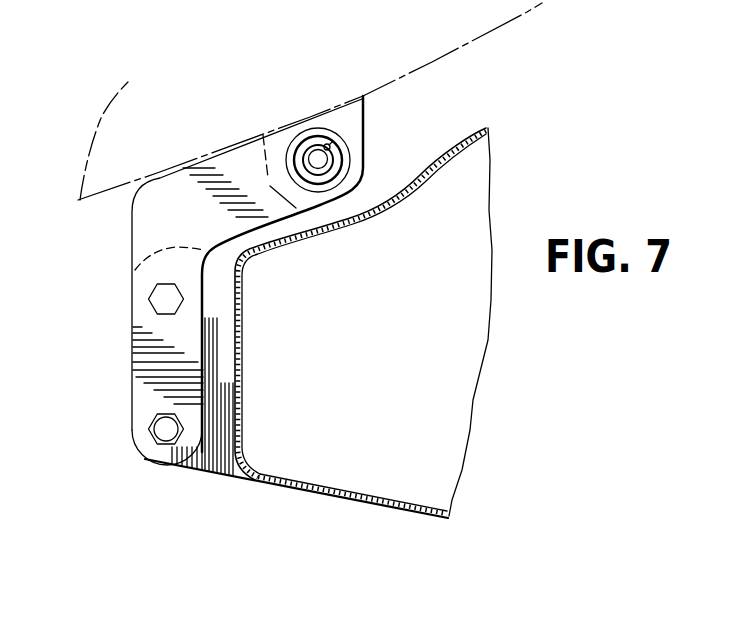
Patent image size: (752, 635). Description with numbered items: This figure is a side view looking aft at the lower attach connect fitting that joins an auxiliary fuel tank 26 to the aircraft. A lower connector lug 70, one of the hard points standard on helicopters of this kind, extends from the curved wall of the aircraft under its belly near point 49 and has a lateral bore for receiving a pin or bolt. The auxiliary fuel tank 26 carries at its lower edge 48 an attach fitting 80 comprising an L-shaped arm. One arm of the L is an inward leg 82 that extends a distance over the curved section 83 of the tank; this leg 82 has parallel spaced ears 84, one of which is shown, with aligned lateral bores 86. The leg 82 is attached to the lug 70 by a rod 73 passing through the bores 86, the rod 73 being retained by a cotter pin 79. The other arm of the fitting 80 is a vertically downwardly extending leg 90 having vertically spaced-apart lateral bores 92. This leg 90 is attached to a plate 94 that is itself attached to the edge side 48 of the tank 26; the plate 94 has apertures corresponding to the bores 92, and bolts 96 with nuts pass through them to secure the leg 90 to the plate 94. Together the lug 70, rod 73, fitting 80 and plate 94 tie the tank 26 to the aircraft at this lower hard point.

The auxiliary fuel tank 26 is at (322, 498).
The lower edge 48 is at (244, 403).
The point 49 is at (430, 63).
The lower connector lug 70 is at (352, 120).
The rod 73 is at (265, 181).
The cotter pin 79 is at (328, 143).
The attach fitting 80 is at (130, 256).
The inward leg 82 is at (217, 163).
The curved section 83 is at (316, 222).
The ear 84 is at (343, 172).
The lateral bore 86 is at (312, 142).
The vertically downwardly extending leg 90 is at (147, 357).
The lateral bore 92 is at (170, 290).
The plate 94 is at (217, 465).
The bolt 96 is at (167, 432).